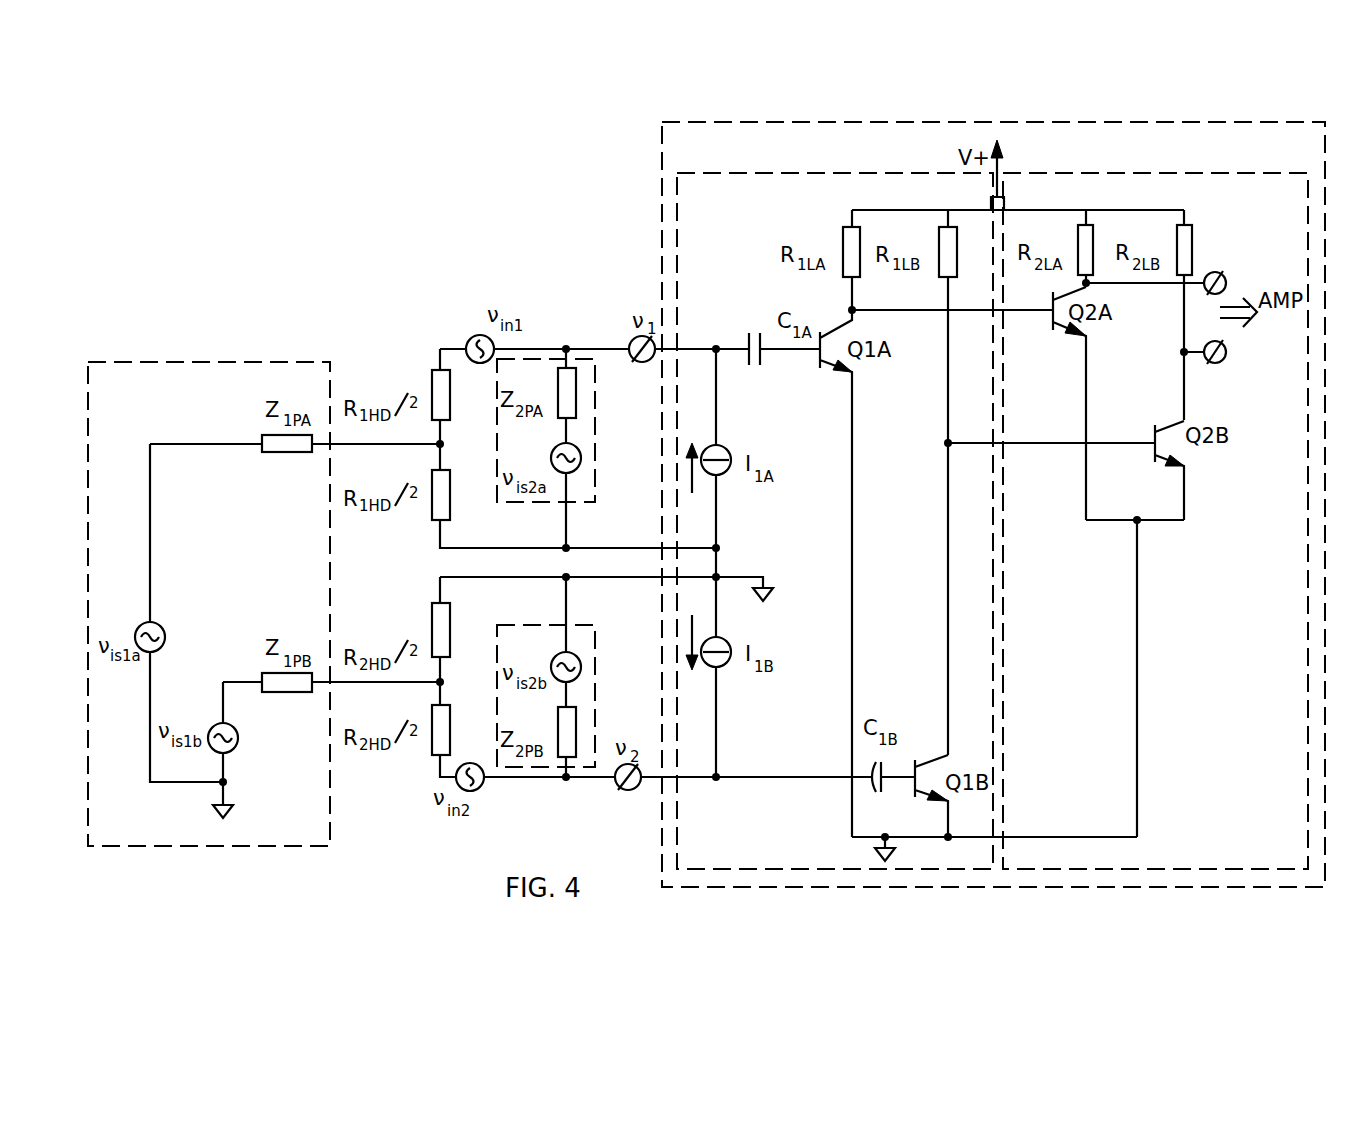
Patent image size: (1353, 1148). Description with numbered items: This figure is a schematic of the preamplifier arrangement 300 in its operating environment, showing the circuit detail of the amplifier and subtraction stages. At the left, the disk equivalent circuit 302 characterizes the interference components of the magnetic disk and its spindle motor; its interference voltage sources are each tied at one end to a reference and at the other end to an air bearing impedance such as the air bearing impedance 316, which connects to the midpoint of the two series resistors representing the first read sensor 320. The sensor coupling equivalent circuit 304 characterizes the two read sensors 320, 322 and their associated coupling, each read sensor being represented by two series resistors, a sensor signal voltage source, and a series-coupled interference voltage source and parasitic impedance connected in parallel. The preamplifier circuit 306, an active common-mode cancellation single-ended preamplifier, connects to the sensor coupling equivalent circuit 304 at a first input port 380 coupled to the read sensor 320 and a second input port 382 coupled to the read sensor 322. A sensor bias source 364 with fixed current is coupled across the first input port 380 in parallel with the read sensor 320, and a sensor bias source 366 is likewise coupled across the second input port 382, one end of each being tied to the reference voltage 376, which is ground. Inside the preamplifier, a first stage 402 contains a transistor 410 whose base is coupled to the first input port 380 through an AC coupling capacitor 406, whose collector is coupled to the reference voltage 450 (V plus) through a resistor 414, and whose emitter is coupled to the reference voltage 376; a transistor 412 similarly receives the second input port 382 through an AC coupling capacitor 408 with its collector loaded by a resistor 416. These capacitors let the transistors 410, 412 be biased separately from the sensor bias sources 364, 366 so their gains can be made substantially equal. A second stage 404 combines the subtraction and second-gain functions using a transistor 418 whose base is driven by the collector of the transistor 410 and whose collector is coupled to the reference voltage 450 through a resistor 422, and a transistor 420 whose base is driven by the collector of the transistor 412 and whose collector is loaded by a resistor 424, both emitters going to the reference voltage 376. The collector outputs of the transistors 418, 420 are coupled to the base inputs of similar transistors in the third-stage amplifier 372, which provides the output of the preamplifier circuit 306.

The preamplifier circuit 300 is at (612, 821).
The disk equivalent circuit 302 is at (192, 362).
The sensor coupling equivalent circuit 304 is at (572, 225).
The preamplifier circuit 306 is at (975, 122).
The air bearing impedance 316 is at (285, 455).
The read sensor 320 is at (470, 392).
The read sensor 322 is at (478, 748).
The sensor bias source 364 is at (720, 445).
The sensor bias source 366 is at (722, 640).
The amplifier 372 is at (1259, 317).
The reference voltage 376 is at (770, 598).
The first input port 380 is at (660, 349).
The second input port 382 is at (660, 777).
The first amplifier stage 402 is at (740, 173).
The second amplifier stage 404 is at (1130, 173).
The AC coupling capacitor 406 is at (749, 342).
The AC coupling capacitor 408 is at (884, 788).
The transistor 410 is at (830, 366).
The transistor 412 is at (928, 760).
The resistor 414 is at (843, 236).
The resistor 416 is at (939, 238).
The transistor 418 is at (1062, 328).
The transistor 420 is at (1162, 460).
The resistor 422 is at (1078, 242).
The resistor 424 is at (1192, 250).
The reference voltage 450 is at (1023, 175).